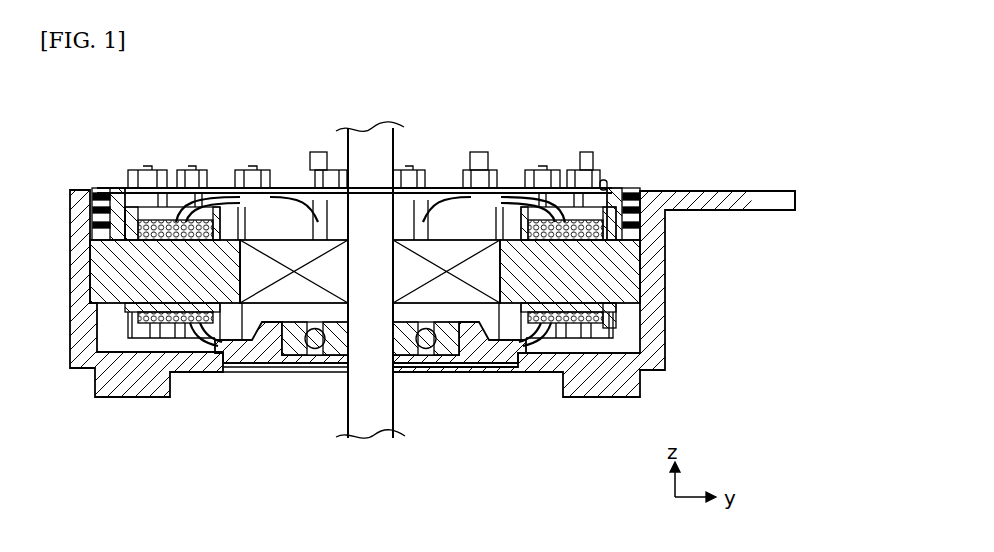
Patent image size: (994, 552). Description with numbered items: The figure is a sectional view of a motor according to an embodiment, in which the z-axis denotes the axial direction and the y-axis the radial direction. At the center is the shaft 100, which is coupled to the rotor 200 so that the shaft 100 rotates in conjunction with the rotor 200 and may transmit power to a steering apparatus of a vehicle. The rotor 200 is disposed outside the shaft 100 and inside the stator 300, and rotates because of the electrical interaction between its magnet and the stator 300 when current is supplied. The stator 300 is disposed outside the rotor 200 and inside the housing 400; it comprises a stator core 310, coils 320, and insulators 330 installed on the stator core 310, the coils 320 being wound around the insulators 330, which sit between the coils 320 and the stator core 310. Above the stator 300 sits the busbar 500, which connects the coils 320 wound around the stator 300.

The shaft 100 is at (338, 406).
The rotor 200 is at (258, 306).
The stator 300 is at (452, 267).
The stator core 310 is at (620, 310).
The coils 320 is at (624, 274).
The insulators 330 is at (604, 236).
The housing 400 is at (666, 355).
The busbar 500 is at (640, 193).